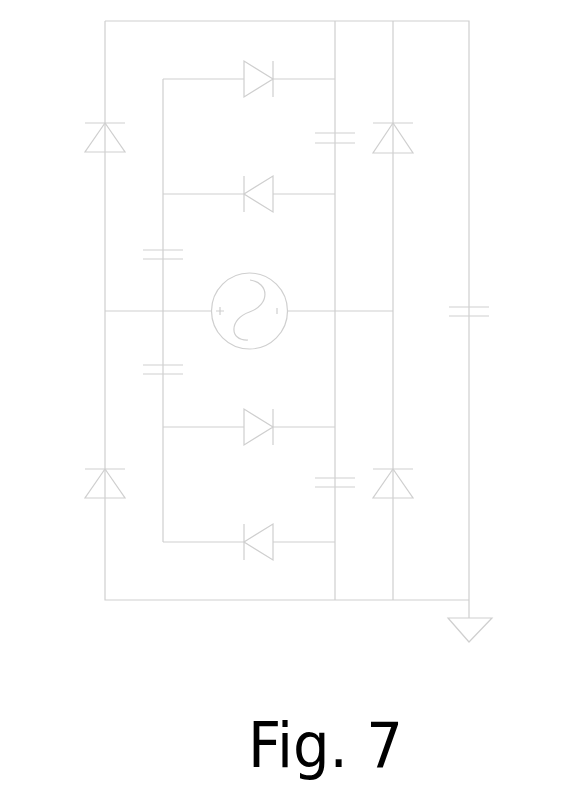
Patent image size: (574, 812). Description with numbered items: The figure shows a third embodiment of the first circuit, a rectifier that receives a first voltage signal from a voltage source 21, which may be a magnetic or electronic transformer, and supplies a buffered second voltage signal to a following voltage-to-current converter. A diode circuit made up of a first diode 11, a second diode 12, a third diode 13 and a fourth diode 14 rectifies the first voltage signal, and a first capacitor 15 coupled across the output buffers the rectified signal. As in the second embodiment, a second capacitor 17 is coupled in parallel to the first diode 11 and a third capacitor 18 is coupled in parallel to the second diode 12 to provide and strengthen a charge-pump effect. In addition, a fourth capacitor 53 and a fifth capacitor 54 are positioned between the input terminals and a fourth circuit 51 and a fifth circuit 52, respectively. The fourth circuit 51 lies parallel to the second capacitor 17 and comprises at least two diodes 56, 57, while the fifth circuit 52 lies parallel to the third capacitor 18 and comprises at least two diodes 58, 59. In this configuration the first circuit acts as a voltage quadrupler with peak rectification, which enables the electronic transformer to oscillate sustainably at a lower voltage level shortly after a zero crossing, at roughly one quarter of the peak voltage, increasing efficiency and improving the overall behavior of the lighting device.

The first diode 11 is at (410, 141).
The second diode 12 is at (412, 487).
The third diode 13 is at (77, 141).
The fourth diode 14 is at (77, 489).
The first capacitor 15 is at (490, 315).
The second capacitor 17 is at (315, 122).
The third capacitor 18 is at (315, 480).
The voltage source 21 is at (250, 295).
The fourth circuit 51 is at (191, 149).
The fifth circuit 52 is at (191, 467).
The fourth capacitor 53 is at (183, 258).
The fifth capacitor 54 is at (183, 374).
The diode 56 is at (252, 64).
The diode 57 is at (252, 180).
The diode 58 is at (252, 411).
The diode 59 is at (252, 526).